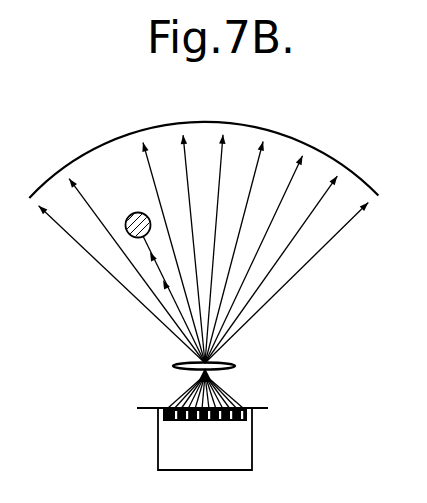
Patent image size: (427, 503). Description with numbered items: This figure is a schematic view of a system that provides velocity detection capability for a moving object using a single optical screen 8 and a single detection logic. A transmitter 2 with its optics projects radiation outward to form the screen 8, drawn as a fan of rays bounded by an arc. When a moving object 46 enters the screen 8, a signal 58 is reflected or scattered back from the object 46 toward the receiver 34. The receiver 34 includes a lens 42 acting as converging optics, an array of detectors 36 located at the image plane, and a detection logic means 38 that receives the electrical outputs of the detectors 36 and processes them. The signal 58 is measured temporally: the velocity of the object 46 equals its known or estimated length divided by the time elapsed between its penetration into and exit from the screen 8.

The transmitter 2 is at (190, 371).
The screen 8 is at (326, 168).
The receiver 34 is at (293, 385).
The array of detectors 36 is at (171, 416).
The detection logic means 38 is at (237, 453).
The lens 42 is at (228, 366).
The object 46 is at (134, 213).
The signal 58 is at (149, 258).